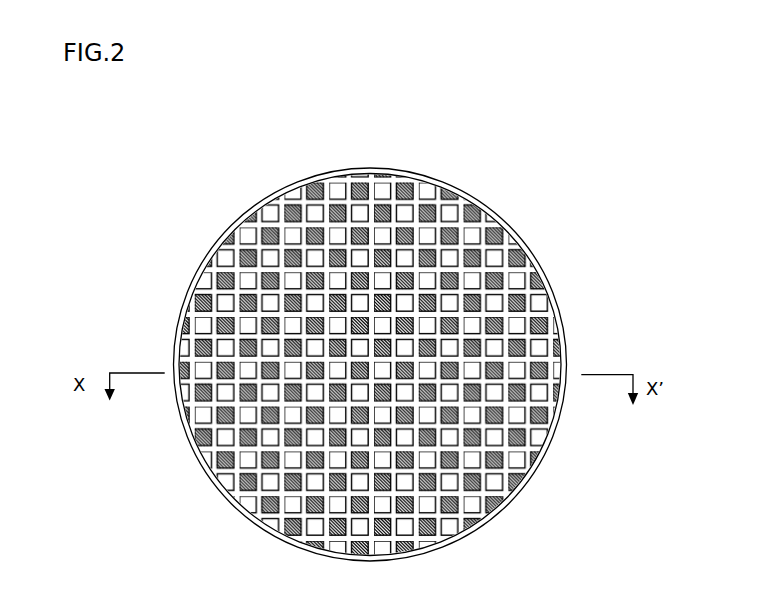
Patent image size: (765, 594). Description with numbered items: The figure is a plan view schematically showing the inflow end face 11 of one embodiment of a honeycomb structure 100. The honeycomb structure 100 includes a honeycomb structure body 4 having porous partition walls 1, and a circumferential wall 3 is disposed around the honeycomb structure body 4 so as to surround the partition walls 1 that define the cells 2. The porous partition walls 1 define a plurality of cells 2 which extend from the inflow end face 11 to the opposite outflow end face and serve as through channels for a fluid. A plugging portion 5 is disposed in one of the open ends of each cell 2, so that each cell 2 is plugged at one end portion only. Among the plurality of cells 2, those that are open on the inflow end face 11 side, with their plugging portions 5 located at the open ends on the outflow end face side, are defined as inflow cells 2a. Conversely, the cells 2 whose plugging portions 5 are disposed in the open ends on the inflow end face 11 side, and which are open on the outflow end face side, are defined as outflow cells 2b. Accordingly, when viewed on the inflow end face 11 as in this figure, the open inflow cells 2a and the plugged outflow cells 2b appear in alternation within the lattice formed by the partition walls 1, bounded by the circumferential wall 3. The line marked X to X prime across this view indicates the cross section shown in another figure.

The honeycomb structure 100 is at (599, 90).
The partition wall 1 is at (407, 223).
The cell 2 is at (370, 326).
The inflow cell 2a is at (287, 227).
The outflow cell 2b is at (353, 223).
The circumferential wall 3 is at (532, 268).
The honeycomb structure body 4 is at (552, 423).
The plugging portion 5 is at (442, 223).
The inflow end face 11 is at (215, 215).